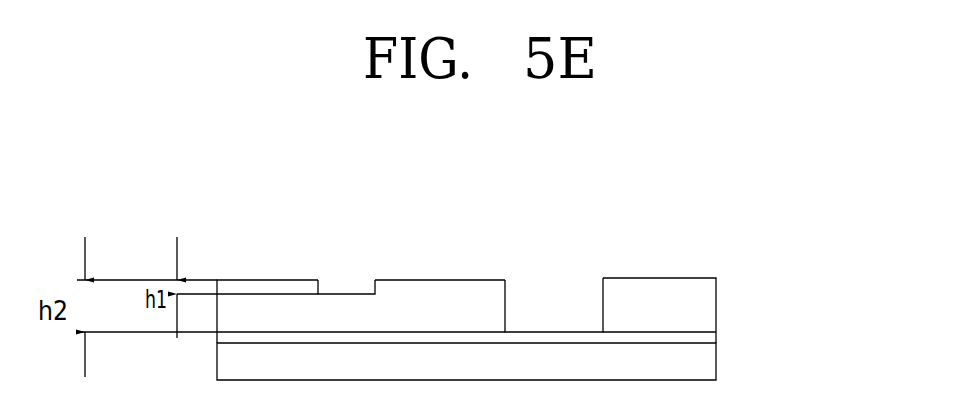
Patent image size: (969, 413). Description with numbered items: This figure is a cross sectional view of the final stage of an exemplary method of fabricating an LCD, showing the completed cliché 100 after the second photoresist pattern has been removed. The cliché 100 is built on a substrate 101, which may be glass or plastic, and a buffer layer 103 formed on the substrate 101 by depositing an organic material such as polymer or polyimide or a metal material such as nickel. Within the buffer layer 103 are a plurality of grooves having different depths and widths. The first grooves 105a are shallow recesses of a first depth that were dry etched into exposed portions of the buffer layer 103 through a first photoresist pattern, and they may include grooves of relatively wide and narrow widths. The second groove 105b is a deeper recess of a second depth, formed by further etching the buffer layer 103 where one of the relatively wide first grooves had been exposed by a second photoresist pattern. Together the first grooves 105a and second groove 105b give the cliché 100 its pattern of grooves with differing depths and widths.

The cliché 100 is at (539, 284).
The substrate 101 is at (708, 362).
The buffer layer 103 is at (708, 314).
The first grooves 105a is at (348, 287).
The second groove 105b is at (560, 303).